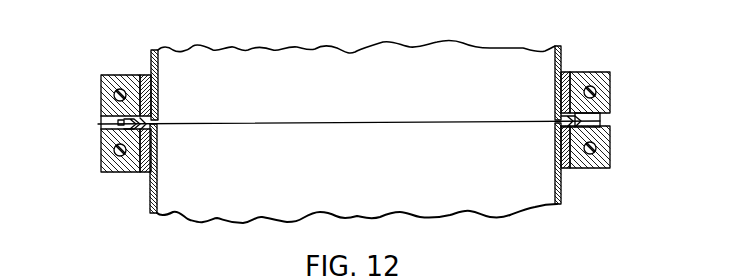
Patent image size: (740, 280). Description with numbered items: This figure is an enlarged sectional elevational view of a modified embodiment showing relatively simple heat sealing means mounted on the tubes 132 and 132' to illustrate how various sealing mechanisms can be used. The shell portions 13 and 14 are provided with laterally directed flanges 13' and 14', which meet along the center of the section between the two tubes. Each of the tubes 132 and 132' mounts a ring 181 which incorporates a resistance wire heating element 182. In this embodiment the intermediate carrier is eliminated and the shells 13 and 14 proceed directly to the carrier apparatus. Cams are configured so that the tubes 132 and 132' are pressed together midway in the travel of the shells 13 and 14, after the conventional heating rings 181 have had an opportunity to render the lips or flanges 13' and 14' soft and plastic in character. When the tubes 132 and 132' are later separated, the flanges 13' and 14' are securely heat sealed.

The shell portion 13 is at (129, 196).
The laterally directed flange 13' is at (81, 139).
The shell portion 14 is at (183, 70).
The laterally directed flange 14' is at (104, 117).
The tube 132 is at (361, 143).
The tube 132' is at (593, 64).
The ring 181 is at (611, 93).
The resistance wire heating element 182 is at (116, 170).